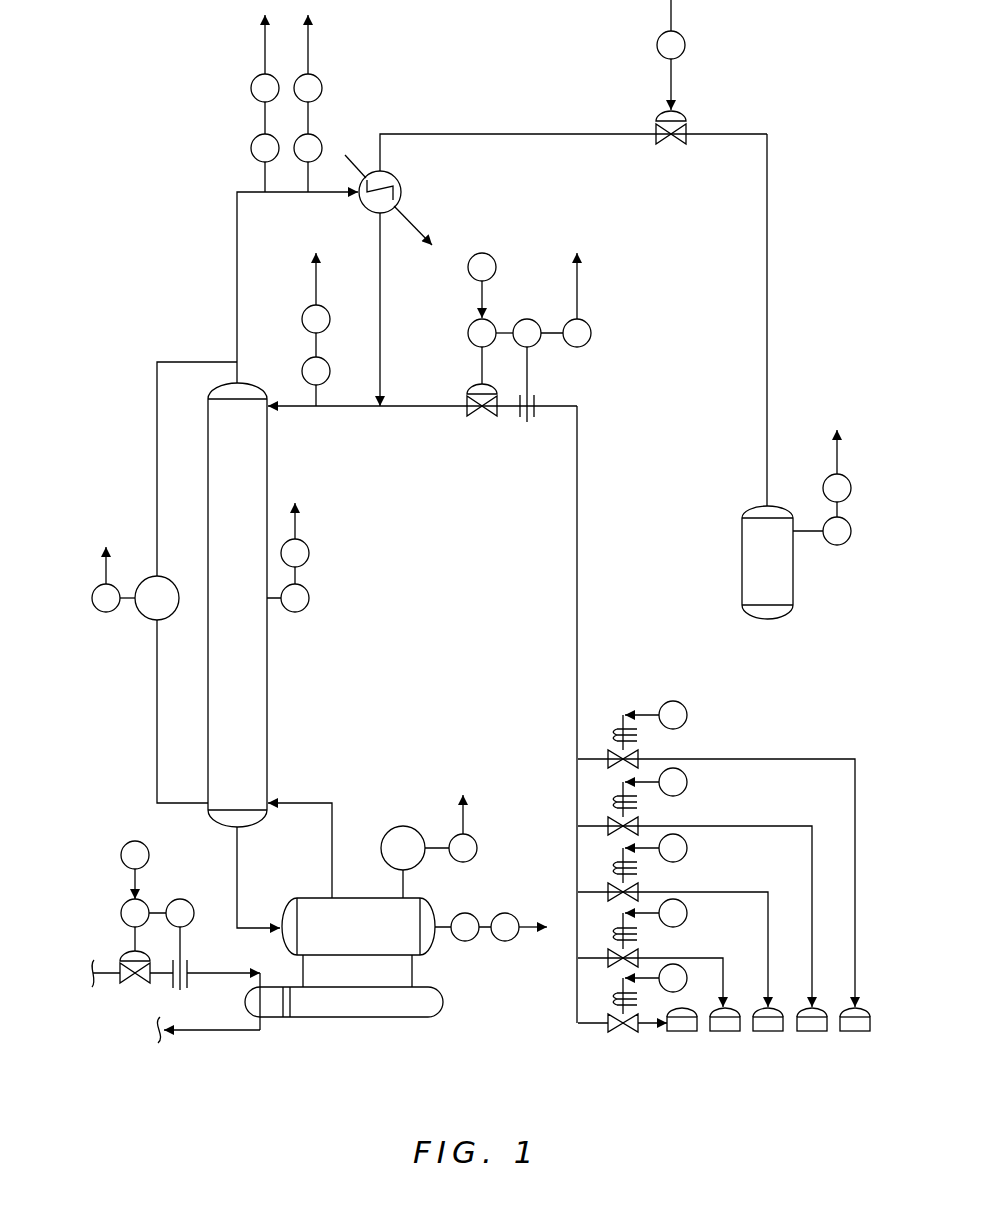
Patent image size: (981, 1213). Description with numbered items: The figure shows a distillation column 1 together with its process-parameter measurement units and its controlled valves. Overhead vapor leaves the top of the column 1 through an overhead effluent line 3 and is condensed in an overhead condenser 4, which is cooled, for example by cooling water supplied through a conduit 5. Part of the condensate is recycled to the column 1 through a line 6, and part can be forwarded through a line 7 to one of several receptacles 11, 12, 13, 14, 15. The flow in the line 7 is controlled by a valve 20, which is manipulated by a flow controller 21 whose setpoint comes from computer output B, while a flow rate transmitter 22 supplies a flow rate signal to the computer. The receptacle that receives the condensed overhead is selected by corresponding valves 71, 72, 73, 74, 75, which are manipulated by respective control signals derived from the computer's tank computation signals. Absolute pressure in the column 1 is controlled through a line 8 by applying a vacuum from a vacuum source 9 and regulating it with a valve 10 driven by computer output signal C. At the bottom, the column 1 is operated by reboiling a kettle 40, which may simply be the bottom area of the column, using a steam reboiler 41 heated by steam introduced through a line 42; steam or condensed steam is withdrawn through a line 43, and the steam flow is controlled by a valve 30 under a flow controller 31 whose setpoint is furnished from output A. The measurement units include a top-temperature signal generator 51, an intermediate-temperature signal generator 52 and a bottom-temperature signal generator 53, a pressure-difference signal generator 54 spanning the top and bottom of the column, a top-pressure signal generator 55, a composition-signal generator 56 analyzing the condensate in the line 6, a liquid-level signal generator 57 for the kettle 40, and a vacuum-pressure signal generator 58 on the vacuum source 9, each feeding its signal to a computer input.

The column 1 is at (245, 671).
The overhead effluent line 3 is at (237, 228).
The overhead condenser 4 is at (396, 178).
The conduit 5 is at (345, 155).
The line 6 is at (348, 410).
The line 7 is at (578, 440).
The line 8 is at (591, 136).
The vacuum source 9 is at (775, 572).
The valve 10 is at (688, 146).
The receptacle 11 is at (855, 1031).
The receptacle 12 is at (812, 1031).
The receptacle 13 is at (768, 1031).
The receptacle 14 is at (725, 1031).
The receptacle 15 is at (682, 1031).
The valve 20 is at (471, 418).
The flow controller 21 is at (492, 322).
The flow rate transmitter 22 is at (536, 322).
The valve 30 is at (145, 983).
The flow controller 31 is at (182, 898).
The kettle 40 is at (370, 938).
The steam reboiler 41 is at (364, 1014).
The line 42 is at (218, 968).
The line 43 is at (208, 1040).
The top-temperature signal generator 51 is at (251, 148).
The intermediate-temperature signal generator 52 is at (309, 600).
The bottom-temperature signal generator 53 is at (390, 830).
The pressure-difference signal generator 54 is at (140, 612).
The top-pressure signal generator 55 is at (317, 138).
The composition-signal generator 56 is at (328, 362).
The liquid-level signal generator 57 is at (467, 941).
The vacuum-pressure signal generator 58 is at (838, 545).
The valve 71 is at (610, 766).
The valve 72 is at (610, 833).
The valve 73 is at (610, 899).
The valve 74 is at (610, 965).
The valve 75 is at (610, 1030).